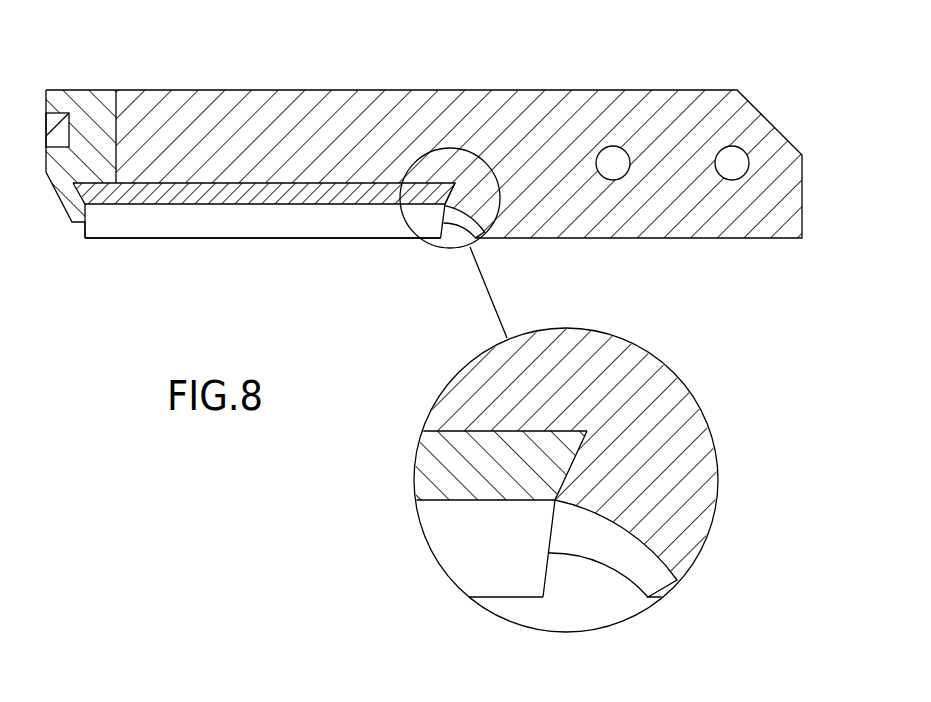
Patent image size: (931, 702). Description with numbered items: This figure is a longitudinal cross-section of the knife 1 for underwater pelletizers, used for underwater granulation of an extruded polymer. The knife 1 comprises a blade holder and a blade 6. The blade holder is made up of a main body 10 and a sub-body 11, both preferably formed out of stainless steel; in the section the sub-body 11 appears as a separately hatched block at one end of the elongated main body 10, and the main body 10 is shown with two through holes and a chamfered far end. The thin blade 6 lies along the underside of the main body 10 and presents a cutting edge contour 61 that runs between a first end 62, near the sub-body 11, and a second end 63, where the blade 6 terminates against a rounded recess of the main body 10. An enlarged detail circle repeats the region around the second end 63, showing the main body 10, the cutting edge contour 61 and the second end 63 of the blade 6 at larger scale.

The knife 1 is at (642, 62).
The main body 10 is at (420, 100).
The sub-body 11 is at (73, 102).
The blade 6 is at (290, 237).
The cutting edge contour 61 is at (198, 237).
The first end 62 is at (86, 238).
The second end 63 is at (442, 240).